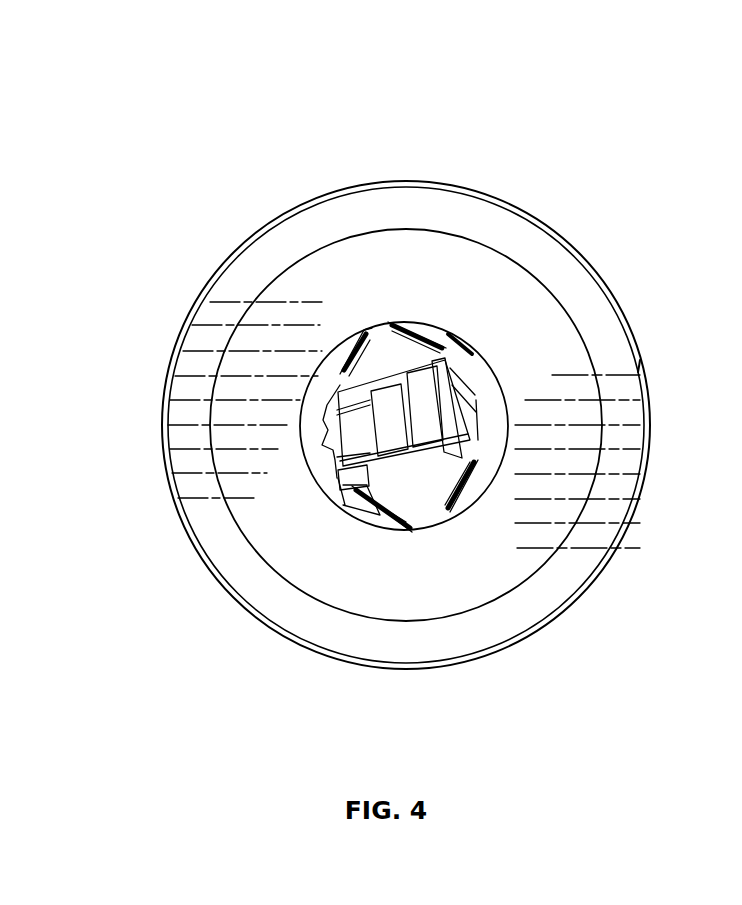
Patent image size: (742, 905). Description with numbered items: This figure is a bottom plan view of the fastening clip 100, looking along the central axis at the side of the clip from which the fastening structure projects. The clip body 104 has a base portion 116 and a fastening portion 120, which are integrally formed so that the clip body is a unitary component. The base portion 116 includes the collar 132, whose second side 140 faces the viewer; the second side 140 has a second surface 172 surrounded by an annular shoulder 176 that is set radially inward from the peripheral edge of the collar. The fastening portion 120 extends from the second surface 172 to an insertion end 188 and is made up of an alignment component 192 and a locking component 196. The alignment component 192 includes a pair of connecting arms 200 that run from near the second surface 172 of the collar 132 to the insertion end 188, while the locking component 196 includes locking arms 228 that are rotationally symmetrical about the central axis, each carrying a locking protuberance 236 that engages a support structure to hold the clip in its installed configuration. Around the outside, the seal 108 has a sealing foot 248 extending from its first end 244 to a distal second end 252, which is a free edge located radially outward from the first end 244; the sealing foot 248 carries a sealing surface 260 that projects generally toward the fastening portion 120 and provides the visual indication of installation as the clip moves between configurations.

The fastening clip 100 is at (273, 100).
The clip body 104 is at (232, 389).
The seal 108 is at (190, 365).
The base portion 116 is at (437, 180).
The fastening portion 120 is at (330, 410).
The collar 132 is at (230, 440).
The second side 140 is at (326, 268).
The second surface 172 is at (397, 243).
The annular shoulder 176 is at (587, 513).
The insertion end 188 is at (457, 395).
The alignment component 192 is at (442, 484).
The locking component 196 is at (345, 450).
The connecting arms 200 is at (400, 367).
The locking arms 228 is at (457, 350).
The locking protuberance 236 is at (443, 345).
The first end 244 is at (551, 293).
The sealing foot 248 is at (611, 324).
The second end 252 is at (641, 362).
The sealing surface 260 is at (632, 440).